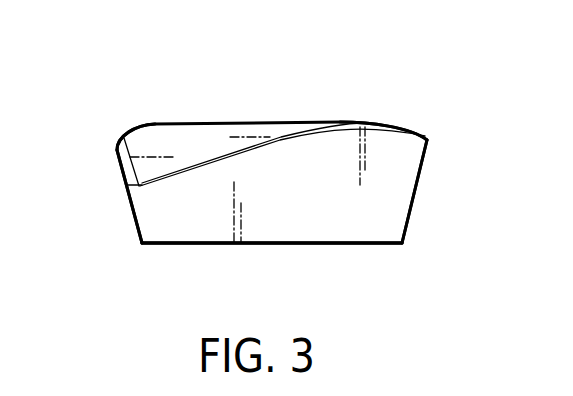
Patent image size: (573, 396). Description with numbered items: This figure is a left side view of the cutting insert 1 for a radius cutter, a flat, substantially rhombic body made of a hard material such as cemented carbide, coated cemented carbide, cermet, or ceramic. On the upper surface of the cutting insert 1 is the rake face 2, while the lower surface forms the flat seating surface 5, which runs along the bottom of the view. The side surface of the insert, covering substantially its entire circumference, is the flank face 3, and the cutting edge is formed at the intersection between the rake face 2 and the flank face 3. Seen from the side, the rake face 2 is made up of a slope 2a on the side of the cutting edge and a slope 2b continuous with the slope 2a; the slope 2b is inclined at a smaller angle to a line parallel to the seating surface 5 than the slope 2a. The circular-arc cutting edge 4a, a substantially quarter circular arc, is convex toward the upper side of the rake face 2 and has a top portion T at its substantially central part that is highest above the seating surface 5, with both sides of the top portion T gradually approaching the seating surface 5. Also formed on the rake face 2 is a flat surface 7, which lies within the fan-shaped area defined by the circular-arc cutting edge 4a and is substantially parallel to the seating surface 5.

The cutting insert 1 is at (359, 101).
The rake face 2 is at (262, 126).
The slope 2a is at (117, 158).
The slope 2b is at (150, 138).
The flank face 3 is at (398, 193).
The circular-arc cutting edge 4a is at (410, 130).
The seating surface 5 is at (268, 245).
The flat surface 7 is at (298, 122).
The top portion T is at (375, 122).